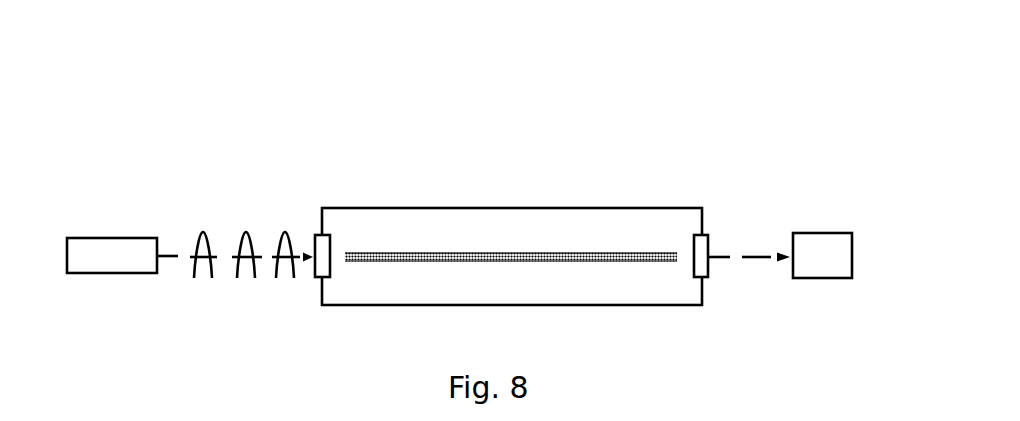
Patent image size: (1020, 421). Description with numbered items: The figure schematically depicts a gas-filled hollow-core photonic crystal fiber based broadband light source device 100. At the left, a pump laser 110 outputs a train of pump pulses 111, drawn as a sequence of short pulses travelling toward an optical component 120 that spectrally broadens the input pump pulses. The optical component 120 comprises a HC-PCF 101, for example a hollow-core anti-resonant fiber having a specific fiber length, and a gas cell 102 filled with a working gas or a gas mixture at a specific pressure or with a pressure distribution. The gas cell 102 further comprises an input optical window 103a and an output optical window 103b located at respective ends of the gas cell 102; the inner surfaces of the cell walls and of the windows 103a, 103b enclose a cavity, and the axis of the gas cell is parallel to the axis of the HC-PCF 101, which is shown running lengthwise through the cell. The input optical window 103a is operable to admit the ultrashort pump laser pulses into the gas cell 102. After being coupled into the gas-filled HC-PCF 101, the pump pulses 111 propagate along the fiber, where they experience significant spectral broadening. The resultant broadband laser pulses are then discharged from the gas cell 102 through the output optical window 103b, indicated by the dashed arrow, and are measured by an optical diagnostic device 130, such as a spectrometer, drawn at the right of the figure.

The broadband light source device 100 is at (457, 87).
The pump laser 110 is at (112, 238).
The pump pulses 111 is at (247, 233).
The optical component 120 is at (450, 206).
The gas cell 102 is at (605, 208).
The HC-PCF 101 is at (517, 252).
The input optical window 103a is at (322, 247).
The output optical window 103b is at (702, 255).
The optical diagnostic device 130 is at (823, 233).